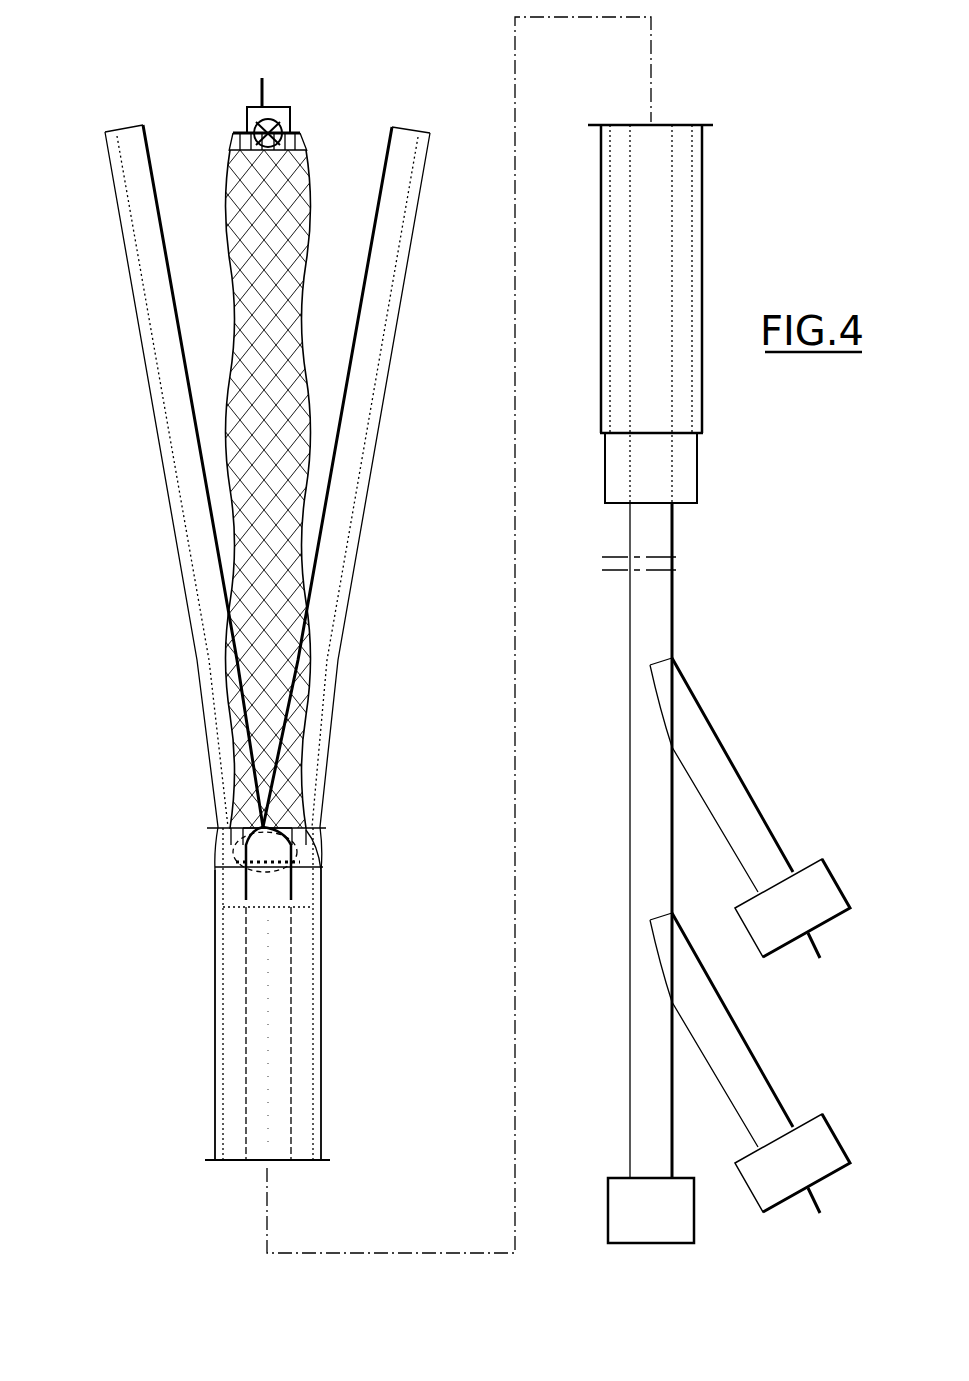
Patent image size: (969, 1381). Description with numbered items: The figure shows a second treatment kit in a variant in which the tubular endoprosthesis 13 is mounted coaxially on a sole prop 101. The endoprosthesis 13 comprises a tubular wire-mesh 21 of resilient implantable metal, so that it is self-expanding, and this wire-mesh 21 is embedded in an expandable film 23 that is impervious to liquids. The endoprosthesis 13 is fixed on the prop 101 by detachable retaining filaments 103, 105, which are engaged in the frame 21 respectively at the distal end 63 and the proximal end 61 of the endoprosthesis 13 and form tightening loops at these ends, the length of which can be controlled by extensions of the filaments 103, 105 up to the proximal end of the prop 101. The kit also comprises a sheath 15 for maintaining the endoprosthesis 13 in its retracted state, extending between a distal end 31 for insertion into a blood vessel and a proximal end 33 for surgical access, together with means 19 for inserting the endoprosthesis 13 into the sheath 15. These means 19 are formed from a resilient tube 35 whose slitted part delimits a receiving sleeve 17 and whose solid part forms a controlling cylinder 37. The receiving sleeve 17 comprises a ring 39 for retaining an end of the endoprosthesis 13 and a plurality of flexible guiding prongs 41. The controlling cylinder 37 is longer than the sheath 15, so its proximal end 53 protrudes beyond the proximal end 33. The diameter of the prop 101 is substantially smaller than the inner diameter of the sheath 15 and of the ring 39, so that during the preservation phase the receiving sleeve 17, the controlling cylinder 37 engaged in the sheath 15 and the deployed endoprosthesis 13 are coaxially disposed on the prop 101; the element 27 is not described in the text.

The tubular endoprosthesis 13 is at (310, 312).
The sheath 15 is at (216, 1013).
The receiving sleeve 17 is at (372, 455).
The means for inserting the endoprosthesis 19 is at (218, 1073).
The tubular wire-mesh 21 is at (262, 197).
The expandable film 23 is at (274, 232).
The catheter outer wall 27 is at (216, 975).
The distal end 31 is at (210, 828).
The proximal end 33 is at (605, 448).
The resilient tube 35 is at (213, 868).
The controlling cylinder 37 is at (218, 1128).
The ring 39 is at (283, 840).
The flexible guiding prongs 41 is at (133, 200).
The proximal end 53 is at (682, 520).
The proximal end 61 is at (243, 895).
The distal end 63 is at (236, 131).
The prop 101 is at (270, 1047).
The retaining filament 103 is at (292, 132).
The retaining filament 105 is at (323, 872).